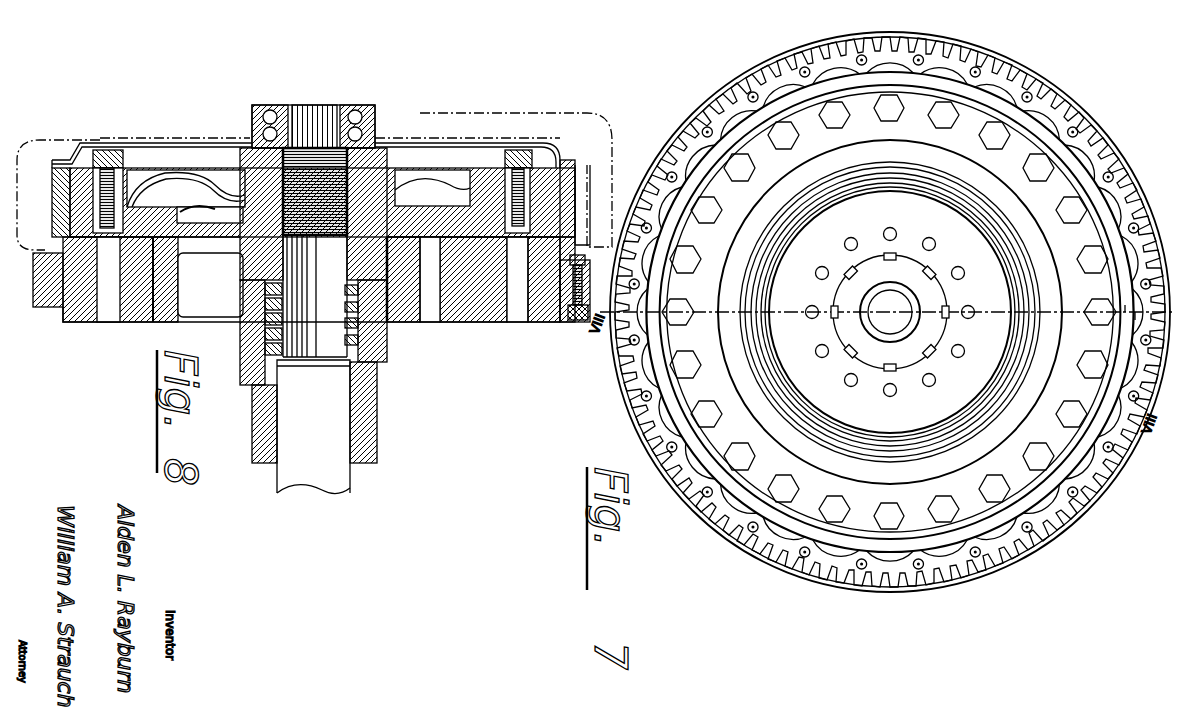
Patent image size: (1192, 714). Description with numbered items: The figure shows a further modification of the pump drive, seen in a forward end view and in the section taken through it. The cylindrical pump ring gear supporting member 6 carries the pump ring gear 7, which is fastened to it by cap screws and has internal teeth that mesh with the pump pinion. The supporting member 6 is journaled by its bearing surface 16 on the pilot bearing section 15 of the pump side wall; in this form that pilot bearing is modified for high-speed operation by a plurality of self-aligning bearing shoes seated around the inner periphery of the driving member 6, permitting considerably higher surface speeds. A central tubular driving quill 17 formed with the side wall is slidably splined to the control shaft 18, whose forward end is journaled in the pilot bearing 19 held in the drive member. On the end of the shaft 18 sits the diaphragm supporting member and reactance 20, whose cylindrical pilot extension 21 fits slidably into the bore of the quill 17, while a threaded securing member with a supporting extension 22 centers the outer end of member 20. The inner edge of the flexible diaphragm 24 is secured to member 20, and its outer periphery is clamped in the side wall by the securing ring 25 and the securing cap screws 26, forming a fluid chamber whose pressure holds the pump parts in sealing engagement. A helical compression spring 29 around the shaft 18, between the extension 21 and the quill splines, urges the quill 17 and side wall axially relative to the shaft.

In FIG. 8, the pump ring gear supporting member 6 is at (580, 192).
In FIG. 7, the pump ring gear supporting member 6 is at (688, 140).
In FIG. 8, the pump ring gear 7 is at (543, 322).
In FIG. 7, the pilot bearing section 15 is at (790, 518).
In FIG. 7, the bearing surface 16 is at (790, 84).
In FIG. 8, the tubular driving quill section 17 is at (262, 380).
In FIG. 8, the control shaft 18 is at (345, 380).
In FIG. 7, the control shaft 18 is at (835, 300).
In FIG. 8, the pilot bearing 19 is at (255, 118).
In FIG. 8, the diaphragm supporting member 20 is at (394, 145).
In FIG. 7, the diaphragm supporting member 20 is at (905, 395).
In FIG. 8, the cylindrical pilot extension 21 is at (205, 230).
In FIG. 7, the cylindrical pilot extension 21 is at (865, 355).
In FIG. 8, the supporting extension 22 is at (362, 325).
In FIG. 8, the flexible diaphragm 24 is at (405, 245).
In FIG. 7, the flexible diaphragm 24 is at (775, 370).
In FIG. 8, the securing ring 25 is at (225, 152).
In FIG. 7, the securing ring 25 is at (857, 517).
In FIG. 8, the securing cap screws 26 is at (108, 150).
In FIG. 7, the securing cap screws 26 is at (1068, 315).
In FIG. 8, the helical compression spring 29 is at (262, 330).